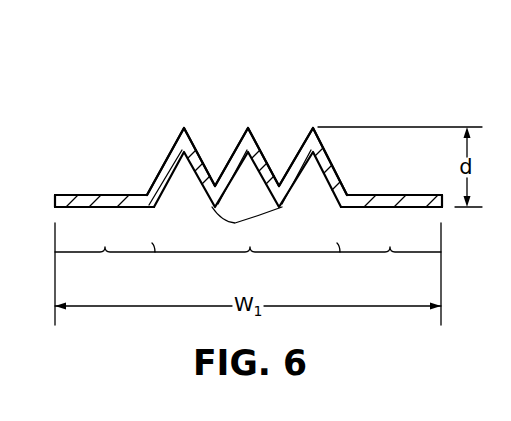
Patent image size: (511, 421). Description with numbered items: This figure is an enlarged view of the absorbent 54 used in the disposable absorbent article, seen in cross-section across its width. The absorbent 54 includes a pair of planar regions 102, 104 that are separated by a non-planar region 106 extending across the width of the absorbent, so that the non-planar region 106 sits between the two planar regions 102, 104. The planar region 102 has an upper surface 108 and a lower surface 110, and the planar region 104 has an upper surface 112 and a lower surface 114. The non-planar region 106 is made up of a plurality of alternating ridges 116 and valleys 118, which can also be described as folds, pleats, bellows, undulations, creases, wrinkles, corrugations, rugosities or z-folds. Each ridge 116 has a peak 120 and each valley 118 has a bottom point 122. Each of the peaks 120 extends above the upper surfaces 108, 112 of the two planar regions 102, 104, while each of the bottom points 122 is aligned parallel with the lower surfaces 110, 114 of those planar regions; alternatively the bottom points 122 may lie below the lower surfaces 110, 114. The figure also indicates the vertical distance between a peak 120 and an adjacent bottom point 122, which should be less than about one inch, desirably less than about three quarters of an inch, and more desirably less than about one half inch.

The absorbent 54 is at (437, 92).
The planar region 102 is at (105, 263).
The planar region 104 is at (390, 265).
The non-planar region 106 is at (247, 263).
The upper surface 108 is at (105, 195).
The lower surface 110 is at (100, 208).
The upper surface 112 is at (400, 195).
The lower surface 114 is at (393, 208).
The ridge 116 is at (180, 141).
The valley 118 is at (215, 155).
The peak 120 is at (184, 128).
The bottom point 122 is at (236, 223).